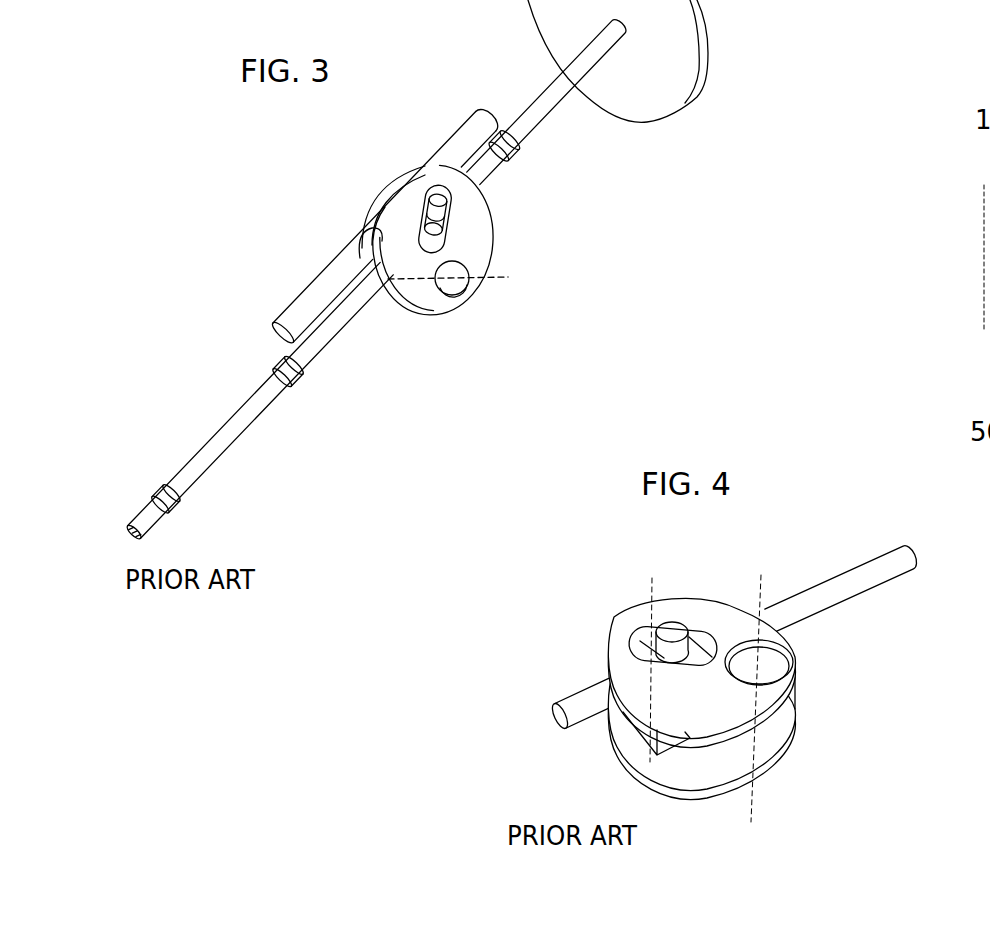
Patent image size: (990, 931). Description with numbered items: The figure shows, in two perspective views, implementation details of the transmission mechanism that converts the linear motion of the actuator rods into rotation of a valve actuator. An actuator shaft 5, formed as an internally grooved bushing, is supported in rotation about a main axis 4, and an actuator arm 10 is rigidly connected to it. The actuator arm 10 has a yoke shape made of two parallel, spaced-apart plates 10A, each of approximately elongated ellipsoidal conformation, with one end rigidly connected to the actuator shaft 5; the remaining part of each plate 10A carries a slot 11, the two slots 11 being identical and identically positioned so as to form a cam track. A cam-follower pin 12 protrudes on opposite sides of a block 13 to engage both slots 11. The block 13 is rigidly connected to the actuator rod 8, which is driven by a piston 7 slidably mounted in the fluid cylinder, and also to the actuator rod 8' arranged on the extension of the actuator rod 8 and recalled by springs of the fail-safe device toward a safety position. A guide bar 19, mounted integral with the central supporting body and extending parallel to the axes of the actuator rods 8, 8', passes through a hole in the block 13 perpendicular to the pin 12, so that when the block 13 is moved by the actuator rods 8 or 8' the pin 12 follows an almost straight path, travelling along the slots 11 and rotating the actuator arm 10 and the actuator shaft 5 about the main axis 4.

In FIG. 3, the main axis 4 is at (502, 290).
In FIG. 4, the main axis 4 is at (752, 808).
In FIG. 3, the actuator shaft 5 is at (462, 300).
In FIG. 4, the actuator shaft 5 is at (795, 680).
In FIG. 3, the piston 7 is at (680, 97).
In FIG. 3, the actuator rod 8 is at (548, 100).
In FIG. 3, the actuator rod 8' is at (259, 401).
In FIG. 3, the actuator arm 10 is at (496, 232).
In FIG. 4, the actuator arm 10 is at (633, 592).
In FIG. 3, the plates 10A is at (352, 221).
In FIG. 4, the plates 10A is at (612, 632).
In FIG. 3, the slot 11 is at (428, 181).
In FIG. 4, the slot 11 is at (657, 621).
In FIG. 3, the cam-follower pin 12 is at (468, 219).
In FIG. 4, the cam-follower pin 12 is at (690, 616).
In FIG. 3, the block 13 is at (378, 187).
In FIG. 4, the block 13 is at (590, 668).
In FIG. 3, the guide bar 19 is at (310, 292).
In FIG. 4, the guide bar 19 is at (873, 592).